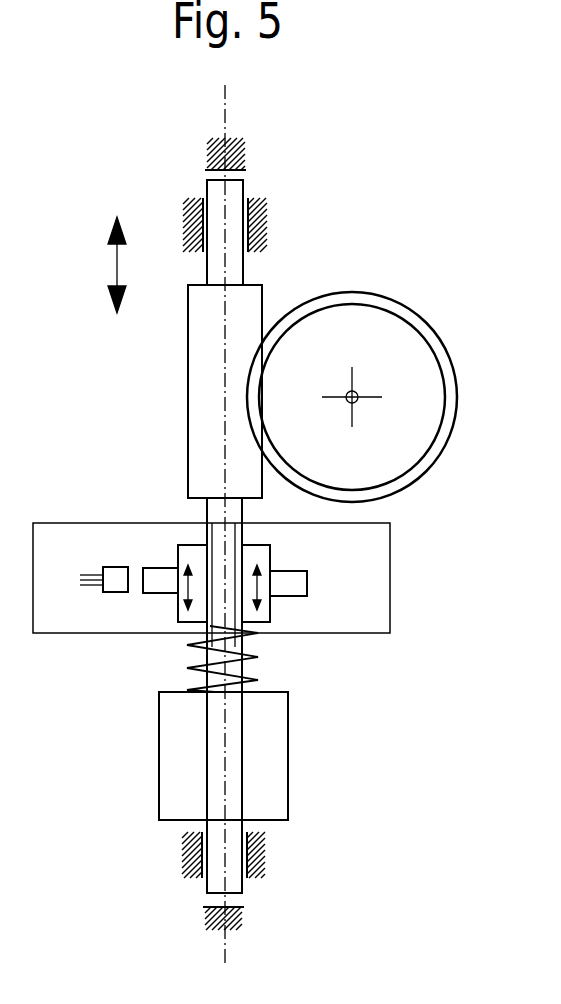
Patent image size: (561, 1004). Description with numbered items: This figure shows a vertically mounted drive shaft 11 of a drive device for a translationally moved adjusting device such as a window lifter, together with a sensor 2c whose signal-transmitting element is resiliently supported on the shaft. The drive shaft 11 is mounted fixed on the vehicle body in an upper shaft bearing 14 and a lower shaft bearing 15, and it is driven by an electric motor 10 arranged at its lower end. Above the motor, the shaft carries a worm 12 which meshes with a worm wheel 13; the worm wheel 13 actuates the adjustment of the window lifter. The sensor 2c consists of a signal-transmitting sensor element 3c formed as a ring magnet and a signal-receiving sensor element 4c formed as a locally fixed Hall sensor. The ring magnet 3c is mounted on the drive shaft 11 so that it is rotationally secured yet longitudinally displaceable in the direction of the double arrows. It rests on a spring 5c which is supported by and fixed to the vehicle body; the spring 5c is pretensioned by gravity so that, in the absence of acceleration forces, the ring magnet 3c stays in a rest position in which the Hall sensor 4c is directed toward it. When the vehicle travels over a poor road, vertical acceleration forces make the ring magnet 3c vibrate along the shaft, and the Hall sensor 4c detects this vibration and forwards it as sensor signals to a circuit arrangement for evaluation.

The shaft bearing 14 is at (243, 174).
The drive shaft 11 is at (233, 260).
The worm 12 is at (217, 378).
The worm wheel 13 is at (383, 340).
The sensor 2c is at (358, 608).
The signal-receiving sensor element 4c is at (117, 578).
The signal-transmitting sensor element 3c is at (283, 582).
The spring 5c is at (192, 667).
The electric motor 10 is at (262, 748).
The shaft bearing 15 is at (242, 903).